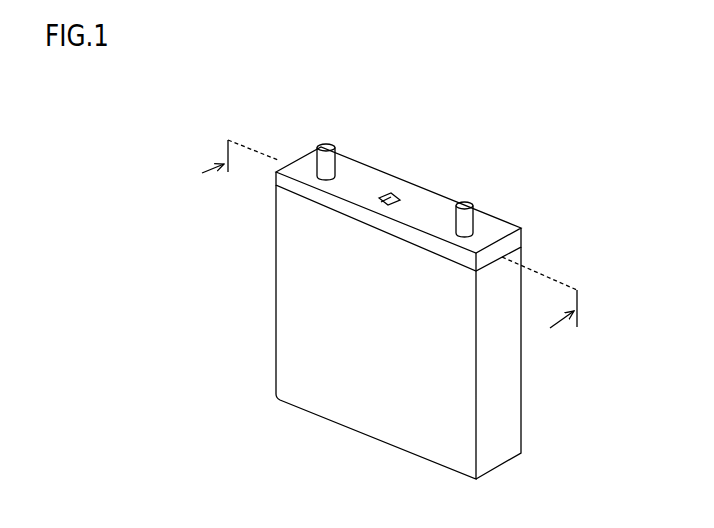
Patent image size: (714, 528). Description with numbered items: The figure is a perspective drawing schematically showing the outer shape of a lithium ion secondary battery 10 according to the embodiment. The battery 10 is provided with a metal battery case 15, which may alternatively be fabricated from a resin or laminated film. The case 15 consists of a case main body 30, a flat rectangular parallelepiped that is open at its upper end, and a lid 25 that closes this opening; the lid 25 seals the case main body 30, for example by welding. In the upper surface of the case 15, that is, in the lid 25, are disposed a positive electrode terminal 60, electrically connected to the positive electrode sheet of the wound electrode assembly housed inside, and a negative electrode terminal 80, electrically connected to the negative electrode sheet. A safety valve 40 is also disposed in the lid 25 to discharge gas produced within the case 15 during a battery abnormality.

The lithium ion secondary battery 10 is at (636, 97).
The battery case 15 is at (375, 413).
The lid 25 is at (523, 233).
The case main body 30 is at (516, 424).
The safety valve 40 is at (389, 192).
The positive electrode terminal 60 is at (326, 143).
The negative electrode terminal 80 is at (466, 202).